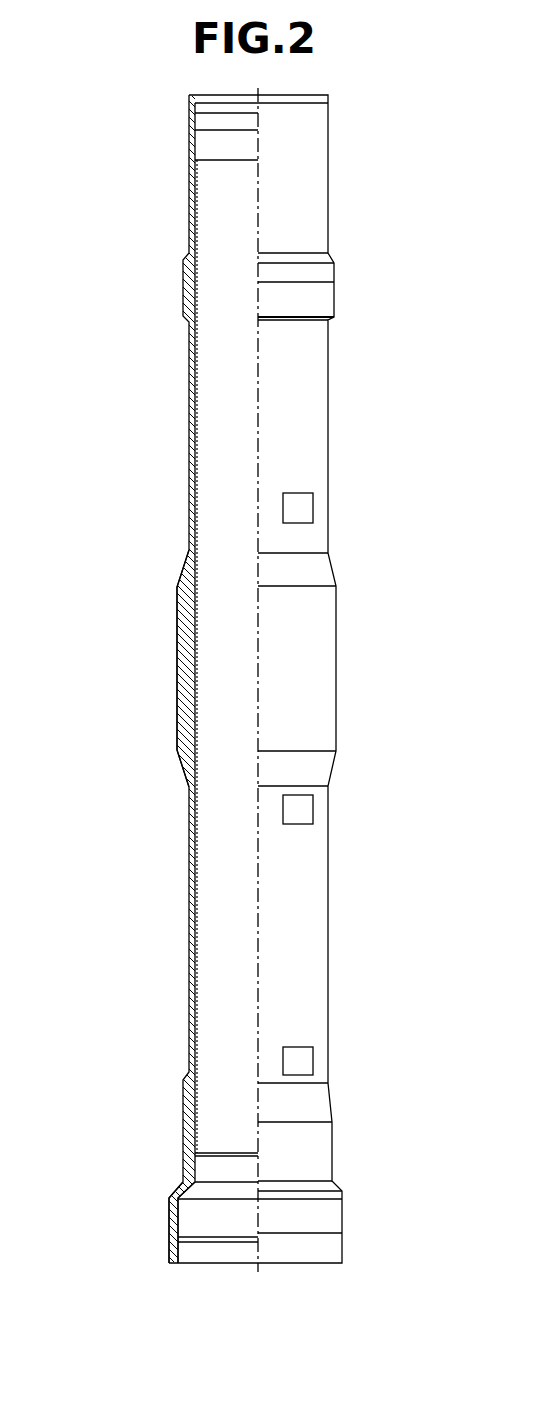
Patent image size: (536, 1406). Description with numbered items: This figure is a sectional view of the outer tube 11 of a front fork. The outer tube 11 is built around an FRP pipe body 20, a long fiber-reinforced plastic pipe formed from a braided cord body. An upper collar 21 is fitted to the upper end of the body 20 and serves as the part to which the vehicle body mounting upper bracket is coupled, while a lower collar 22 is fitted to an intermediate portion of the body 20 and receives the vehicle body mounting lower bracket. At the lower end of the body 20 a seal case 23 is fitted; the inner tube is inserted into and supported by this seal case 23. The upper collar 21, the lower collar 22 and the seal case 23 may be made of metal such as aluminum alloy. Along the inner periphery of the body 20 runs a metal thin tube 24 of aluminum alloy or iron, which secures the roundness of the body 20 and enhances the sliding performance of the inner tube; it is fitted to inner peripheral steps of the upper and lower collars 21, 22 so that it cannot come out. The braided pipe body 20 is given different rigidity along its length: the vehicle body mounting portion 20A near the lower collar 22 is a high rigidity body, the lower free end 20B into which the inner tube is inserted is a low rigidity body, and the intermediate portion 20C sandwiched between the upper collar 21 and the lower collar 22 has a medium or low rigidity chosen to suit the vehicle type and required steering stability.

The outer tube 11 is at (158, 197).
The FRP pipe body 20 is at (189, 437).
The upper collar 21 is at (189, 137).
The lower collar 22 is at (178, 668).
The seal case 23 is at (171, 1222).
The metal thin tube 24 is at (193, 945).
The vehicle body mounting portion 20A is at (307, 808).
The lower end (free end) 20B is at (307, 1060).
The intermediate portion 20C is at (307, 505).